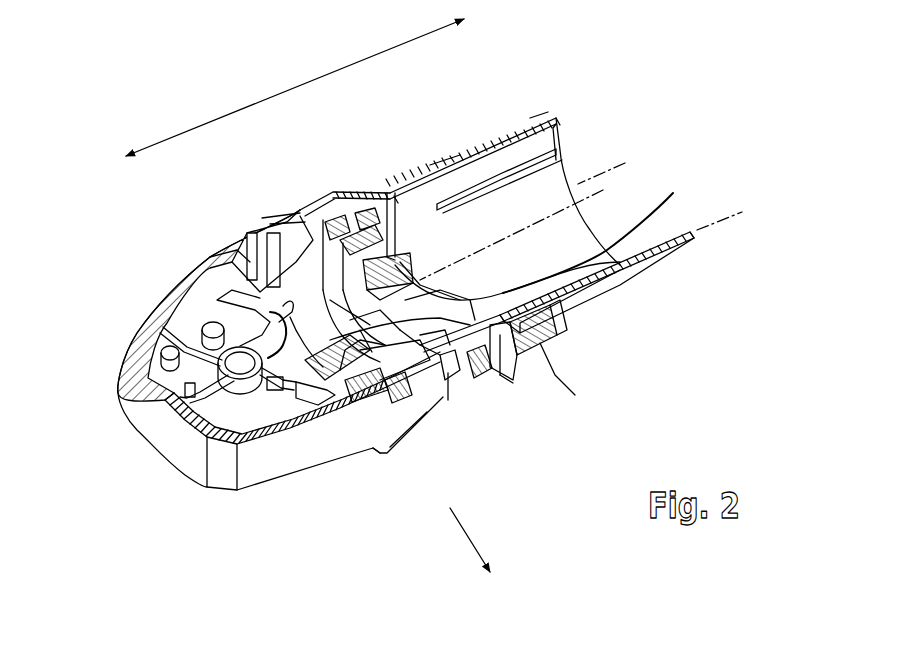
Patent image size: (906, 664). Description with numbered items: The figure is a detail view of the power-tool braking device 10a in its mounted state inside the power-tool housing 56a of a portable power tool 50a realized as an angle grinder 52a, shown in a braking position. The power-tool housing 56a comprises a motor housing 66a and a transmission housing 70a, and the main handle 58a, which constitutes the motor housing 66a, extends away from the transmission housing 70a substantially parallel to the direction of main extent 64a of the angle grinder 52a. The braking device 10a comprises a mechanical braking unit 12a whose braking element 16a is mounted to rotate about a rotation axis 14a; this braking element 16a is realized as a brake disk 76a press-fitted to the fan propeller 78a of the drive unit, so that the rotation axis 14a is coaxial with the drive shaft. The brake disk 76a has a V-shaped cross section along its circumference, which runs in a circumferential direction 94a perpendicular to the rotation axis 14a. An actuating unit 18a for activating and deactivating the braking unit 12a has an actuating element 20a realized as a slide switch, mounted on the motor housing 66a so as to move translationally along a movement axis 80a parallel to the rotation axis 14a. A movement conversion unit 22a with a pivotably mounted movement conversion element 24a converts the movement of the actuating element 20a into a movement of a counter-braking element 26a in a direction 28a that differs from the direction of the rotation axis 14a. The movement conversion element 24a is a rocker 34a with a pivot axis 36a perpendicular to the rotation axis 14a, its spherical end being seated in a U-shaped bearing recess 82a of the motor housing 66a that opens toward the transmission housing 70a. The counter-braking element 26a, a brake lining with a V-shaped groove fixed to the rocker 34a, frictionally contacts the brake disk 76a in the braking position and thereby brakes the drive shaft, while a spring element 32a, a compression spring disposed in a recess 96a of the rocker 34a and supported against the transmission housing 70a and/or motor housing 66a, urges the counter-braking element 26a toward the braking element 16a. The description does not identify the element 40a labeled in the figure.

The power-tool braking device 10a is at (352, 158).
The mechanical braking unit 12a is at (320, 211).
The rotation axis 14a is at (624, 163).
The braking element 16a is at (273, 218).
The actuating unit 18a is at (582, 348).
The actuating element 20a is at (557, 347).
The movement conversion unit 22a is at (389, 462).
The movement conversion element 24a is at (357, 380).
The counter-braking element 26a is at (448, 400).
The direction 28a is at (470, 530).
The spring element 32a is at (368, 385).
The rocker 34a is at (473, 380).
The pivot axis 36a is at (513, 383).
The guide rail 40a is at (683, 243).
The portable power tool 50a is at (648, 88).
The angle grinder 52a is at (673, 107).
The power-tool housing 56a is at (450, 157).
The main handle 58a is at (535, 115).
The direction of main extent 64a is at (292, 87).
The motor housing 66a is at (503, 157).
The transmission housing 70a is at (237, 250).
The brake disk 76a is at (311, 214).
The fan propeller 78a is at (378, 194).
The movement axis 80a is at (720, 220).
The bearing recess 82a is at (675, 190).
The circumferential direction 94a is at (277, 310).
The recess 96a is at (340, 380).